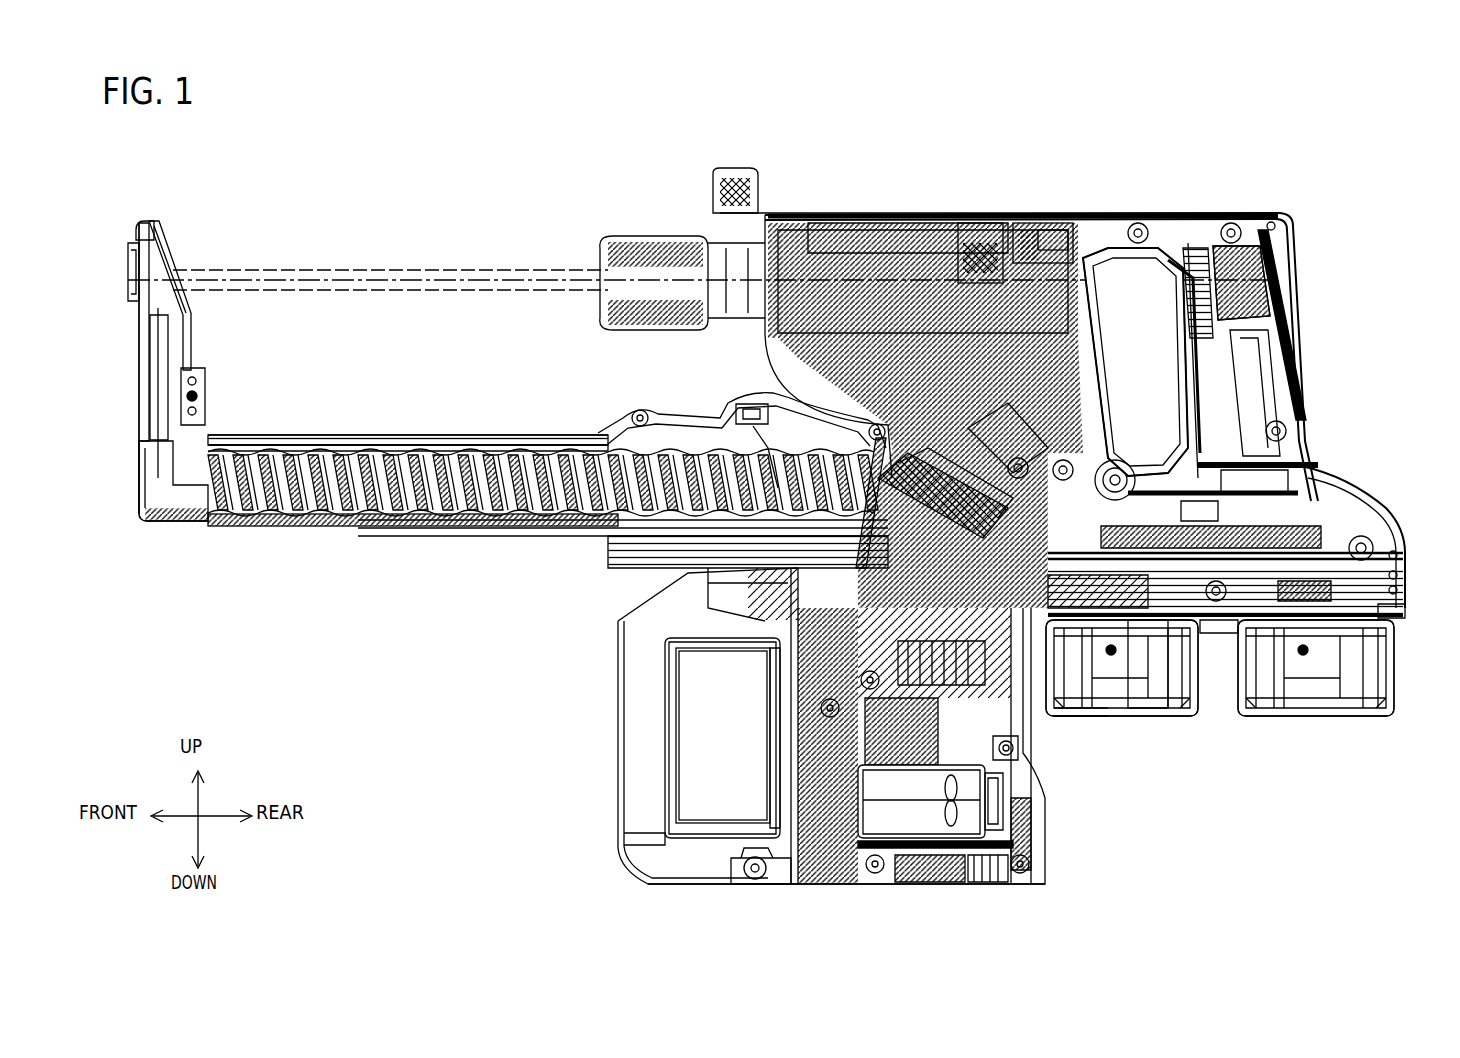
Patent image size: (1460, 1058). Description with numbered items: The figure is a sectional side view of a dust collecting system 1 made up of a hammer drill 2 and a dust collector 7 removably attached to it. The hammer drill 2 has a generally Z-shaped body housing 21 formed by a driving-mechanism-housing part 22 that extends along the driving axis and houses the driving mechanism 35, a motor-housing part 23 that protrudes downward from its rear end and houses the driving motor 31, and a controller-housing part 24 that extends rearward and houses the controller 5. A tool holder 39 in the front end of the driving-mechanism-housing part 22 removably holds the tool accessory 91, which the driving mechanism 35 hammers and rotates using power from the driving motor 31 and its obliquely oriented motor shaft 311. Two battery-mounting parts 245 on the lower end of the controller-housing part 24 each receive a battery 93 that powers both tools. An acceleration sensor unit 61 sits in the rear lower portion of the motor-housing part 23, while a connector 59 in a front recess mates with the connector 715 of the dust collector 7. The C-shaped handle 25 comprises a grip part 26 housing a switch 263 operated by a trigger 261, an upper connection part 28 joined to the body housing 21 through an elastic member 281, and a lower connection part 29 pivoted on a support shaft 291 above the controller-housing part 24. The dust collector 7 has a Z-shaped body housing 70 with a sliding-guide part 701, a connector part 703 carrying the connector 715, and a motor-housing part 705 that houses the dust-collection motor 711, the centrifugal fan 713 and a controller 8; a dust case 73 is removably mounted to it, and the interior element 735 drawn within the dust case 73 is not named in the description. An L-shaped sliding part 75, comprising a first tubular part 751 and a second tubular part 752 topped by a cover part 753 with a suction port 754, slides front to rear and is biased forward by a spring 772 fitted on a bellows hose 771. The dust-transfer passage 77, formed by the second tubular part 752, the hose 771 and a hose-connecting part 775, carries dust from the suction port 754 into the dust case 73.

The dust collecting system 1 is at (437, 652).
The hammer drill 2 is at (1242, 183).
The body housing 21 is at (921, 182).
The driving-mechanism-housing part 22 is at (862, 206).
The motor-housing part 23 is at (1115, 708).
The controller-housing part 24 is at (1340, 496).
The battery-mounting parts 245 is at (1408, 596).
The handle 25 is at (1336, 358).
The grip part 26 is at (1278, 340).
The trigger 261 is at (1155, 290).
The switch 263 is at (1276, 256).
The upper connection part 28 is at (1085, 206).
The elastic member 281 is at (1025, 206).
The lower connection part 29 is at (1155, 460).
The support shaft 291 is at (1237, 700).
The driving motor 31 is at (1108, 422).
The motor shaft 311 is at (1085, 382).
The driving mechanism 35 is at (968, 206).
The tool holder 39 is at (705, 228).
The controller 5 is at (1305, 466).
The connector 59 is at (1022, 718).
The acceleration sensor unit 61 is at (1072, 690).
The dust collector 7 is at (491, 372).
The body housing 70 is at (1052, 785).
The sliding-guide part 701 is at (720, 456).
The connector part 703 is at (757, 613).
The motor-housing part 705 is at (1045, 830).
The dust-collection motor 711 is at (906, 870).
The fan 713 is at (805, 862).
The connector 715 is at (760, 637).
The dust case 73 is at (588, 722).
The dust box 735 is at (688, 760).
The sliding part 75 is at (240, 522).
The first tubular part 751 is at (320, 430).
The second tubular part 752 is at (175, 346).
The cover part 753 is at (148, 224).
The suction port 754 is at (122, 294).
The dust-transfer passage 77 is at (262, 432).
The hose 771 is at (438, 522).
The spring 772 is at (320, 520).
The hose-connecting part 775 is at (760, 443).
The controller 8 is at (962, 878).
The tool accessory 91 is at (325, 262).
The battery 93 is at (1165, 702).